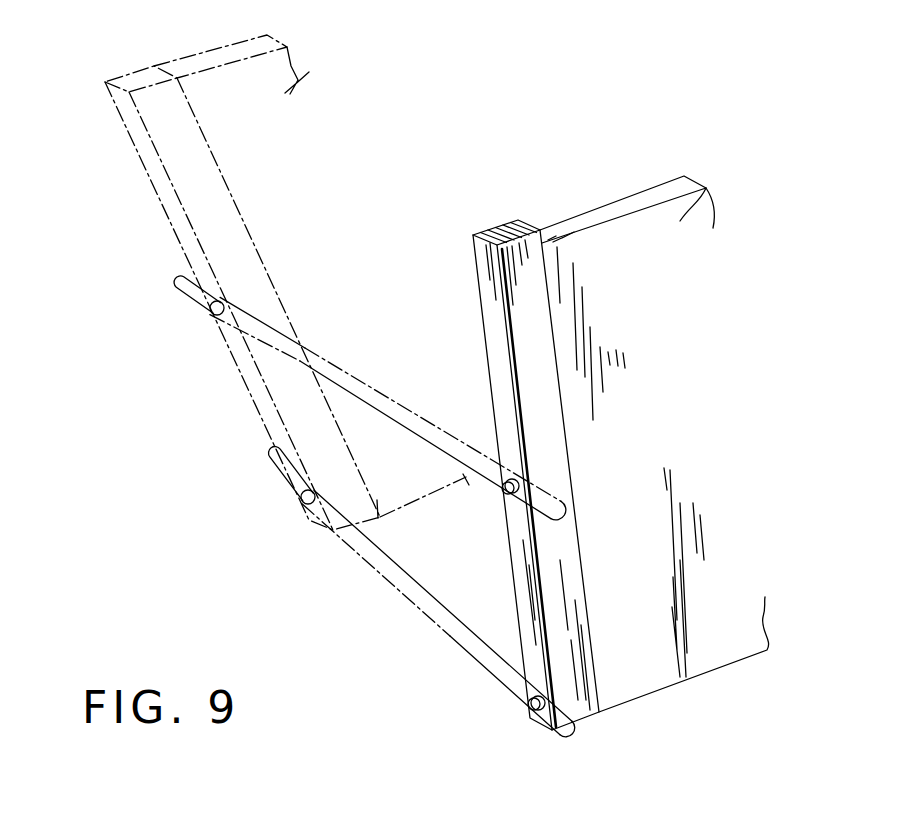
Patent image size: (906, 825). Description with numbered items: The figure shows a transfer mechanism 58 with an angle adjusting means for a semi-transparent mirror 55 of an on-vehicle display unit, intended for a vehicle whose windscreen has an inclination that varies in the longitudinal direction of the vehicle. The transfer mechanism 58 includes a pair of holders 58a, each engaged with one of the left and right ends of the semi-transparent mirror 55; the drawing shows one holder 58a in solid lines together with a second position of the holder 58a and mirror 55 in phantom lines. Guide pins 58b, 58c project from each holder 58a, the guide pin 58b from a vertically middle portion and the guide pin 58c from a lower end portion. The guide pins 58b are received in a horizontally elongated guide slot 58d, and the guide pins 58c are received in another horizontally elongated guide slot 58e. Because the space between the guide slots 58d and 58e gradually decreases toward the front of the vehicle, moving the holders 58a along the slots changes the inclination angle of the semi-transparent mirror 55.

The semi-transparent mirror 55 is at (708, 190).
The transfer mechanism 58 is at (332, 579).
The holder 58a is at (506, 240).
The guide pin 58b is at (507, 496).
The guide pin 58c is at (531, 711).
The guide slot 58d is at (362, 383).
The guide slot 58e is at (416, 604).